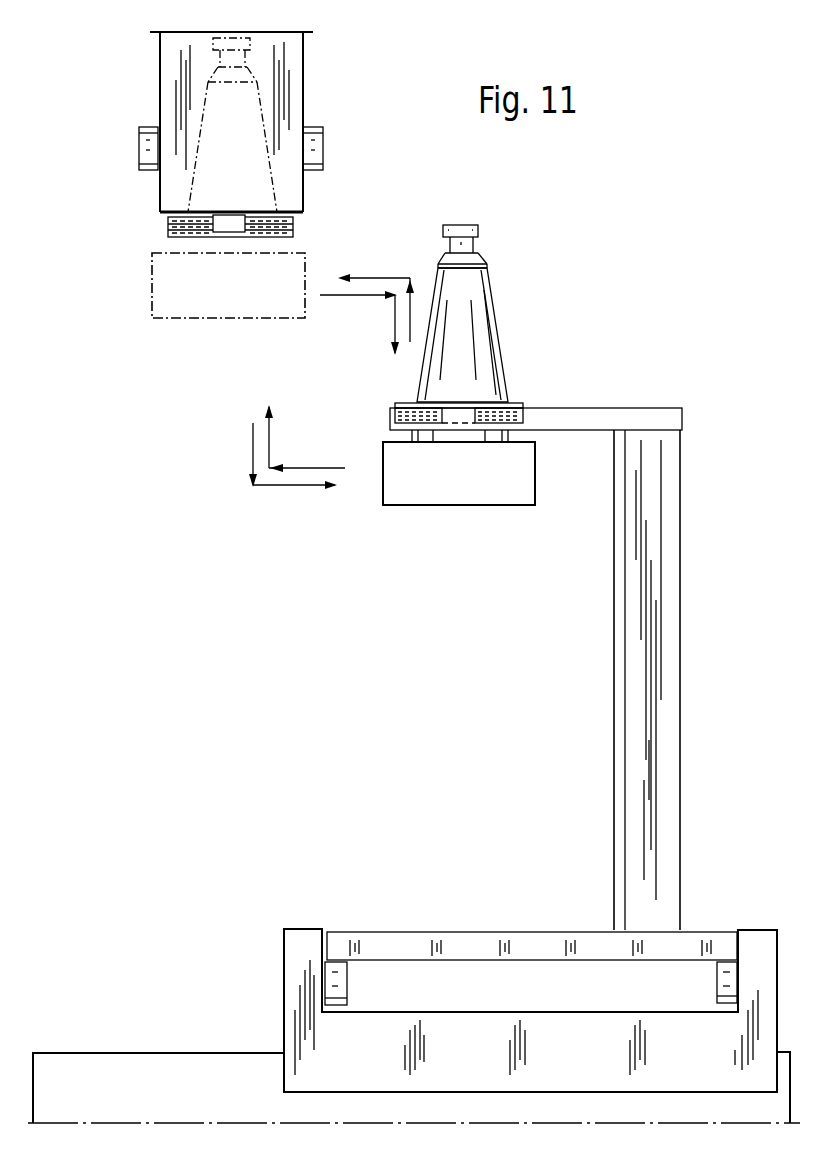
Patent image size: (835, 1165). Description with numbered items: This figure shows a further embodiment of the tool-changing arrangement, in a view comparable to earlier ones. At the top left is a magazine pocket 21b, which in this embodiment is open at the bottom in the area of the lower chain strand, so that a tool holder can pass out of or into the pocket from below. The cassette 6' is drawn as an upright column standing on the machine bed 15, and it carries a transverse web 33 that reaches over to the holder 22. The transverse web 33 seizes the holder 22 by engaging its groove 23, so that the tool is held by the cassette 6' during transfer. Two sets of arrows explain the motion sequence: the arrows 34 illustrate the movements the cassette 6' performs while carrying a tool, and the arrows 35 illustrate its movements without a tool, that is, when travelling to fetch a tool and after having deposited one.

The magazine pocket 21b is at (293, 92).
The arrows 35 is at (380, 290).
The holder 22 is at (478, 313).
The groove 23 is at (525, 407).
The transverse web 33 is at (625, 417).
The arrows 34 is at (288, 475).
The cassette 6' is at (676, 680).
The machine bed / base 15 is at (753, 940).